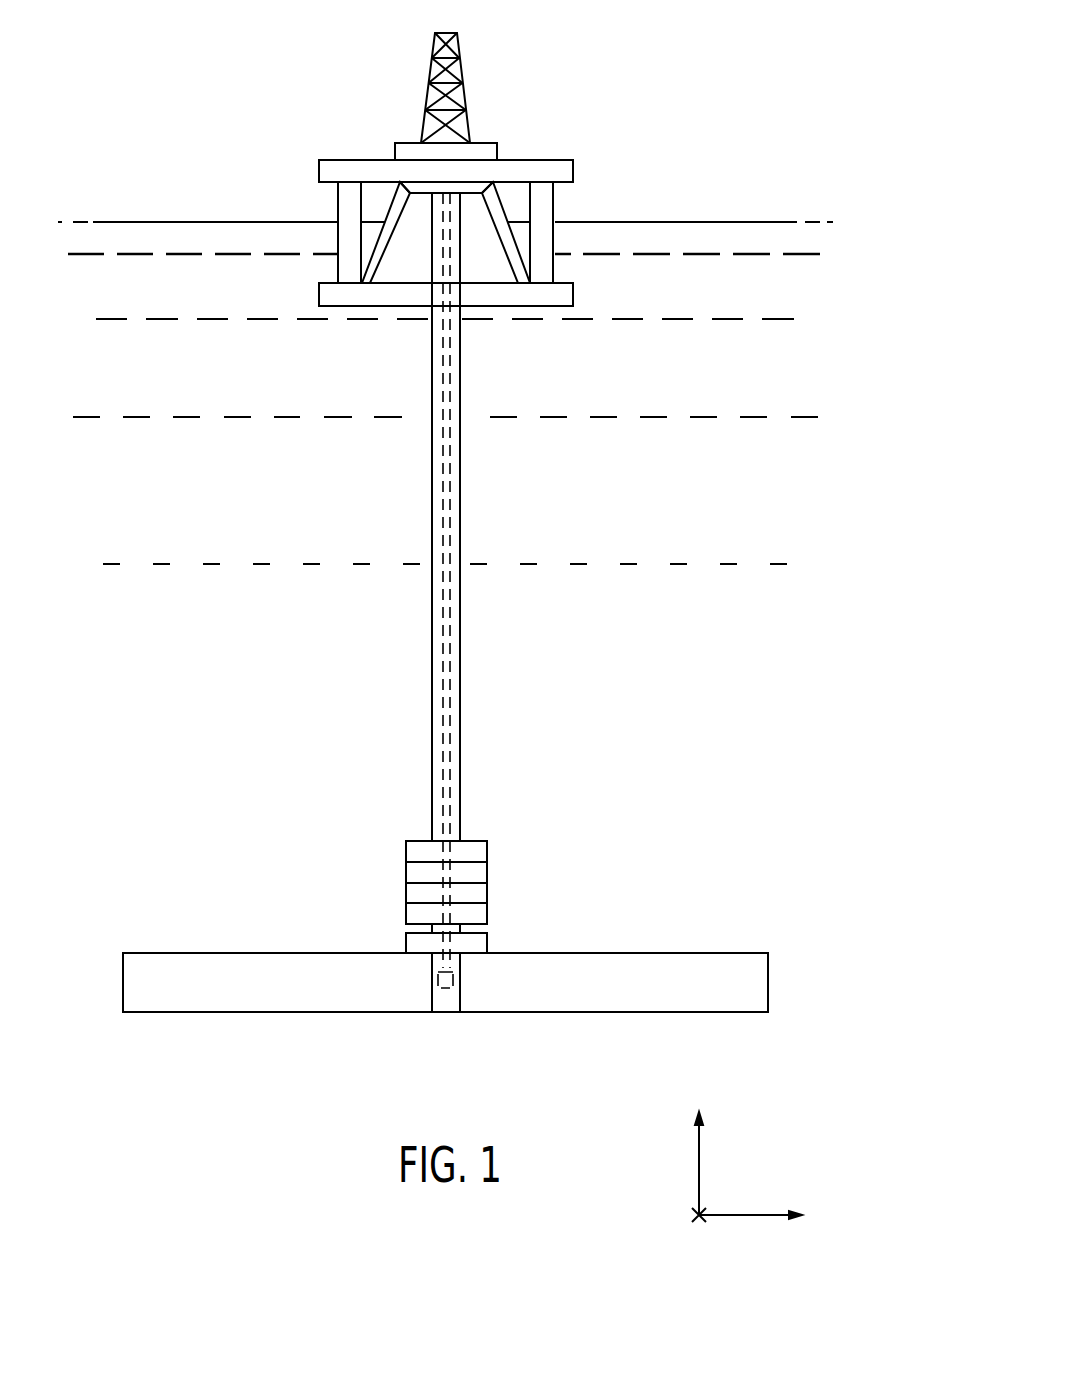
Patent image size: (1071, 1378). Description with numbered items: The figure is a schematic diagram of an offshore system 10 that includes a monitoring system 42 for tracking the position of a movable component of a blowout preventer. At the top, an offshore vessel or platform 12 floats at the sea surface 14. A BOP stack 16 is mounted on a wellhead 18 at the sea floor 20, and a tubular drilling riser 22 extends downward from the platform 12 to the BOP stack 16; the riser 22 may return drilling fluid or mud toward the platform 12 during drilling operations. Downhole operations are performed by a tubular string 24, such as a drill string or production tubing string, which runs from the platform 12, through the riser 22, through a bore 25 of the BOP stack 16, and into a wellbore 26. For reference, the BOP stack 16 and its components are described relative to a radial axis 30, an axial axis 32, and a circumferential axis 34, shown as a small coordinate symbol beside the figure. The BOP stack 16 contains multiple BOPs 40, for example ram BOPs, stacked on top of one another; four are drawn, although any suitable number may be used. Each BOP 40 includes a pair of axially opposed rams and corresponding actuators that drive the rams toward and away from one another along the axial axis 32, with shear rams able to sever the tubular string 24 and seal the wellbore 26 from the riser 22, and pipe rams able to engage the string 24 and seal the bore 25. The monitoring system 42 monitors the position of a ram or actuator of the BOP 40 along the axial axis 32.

The offshore system 10 is at (656, 84).
The platform 12 is at (480, 143).
The sea surface 14 is at (697, 219).
The BOP stack 16 is at (382, 836).
The wellhead 18 is at (406, 943).
The sea floor 20 is at (602, 953).
The tubular drilling riser 22 is at (461, 718).
The tubular string 24 is at (449, 772).
The bore 25 is at (462, 854).
The wellbore 26 is at (460, 1000).
The radial axis 30 is at (699, 1168).
The axial axis 32 is at (745, 1213).
The circumferential axis 34 is at (697, 1222).
The BOP 40 is at (487, 862).
The monitoring system 42 is at (403, 805).